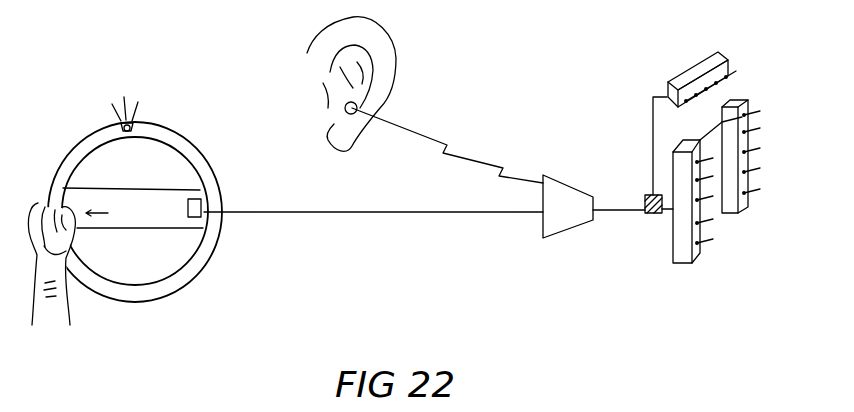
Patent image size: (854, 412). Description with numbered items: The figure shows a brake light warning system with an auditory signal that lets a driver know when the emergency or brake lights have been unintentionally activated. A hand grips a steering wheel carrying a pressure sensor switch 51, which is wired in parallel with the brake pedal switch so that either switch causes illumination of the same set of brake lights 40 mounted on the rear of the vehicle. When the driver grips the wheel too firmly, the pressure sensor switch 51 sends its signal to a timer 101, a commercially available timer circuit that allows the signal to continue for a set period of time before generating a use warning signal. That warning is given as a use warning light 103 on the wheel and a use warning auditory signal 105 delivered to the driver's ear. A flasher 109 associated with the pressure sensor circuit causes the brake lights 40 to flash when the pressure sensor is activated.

The brake lights 40 is at (757, 122).
The pressure sensor switch 51 is at (201, 208).
The timer 101 is at (572, 233).
The use warning light 103 is at (135, 124).
The use warning auditory signal 105 is at (437, 128).
The flasher 109 is at (653, 219).